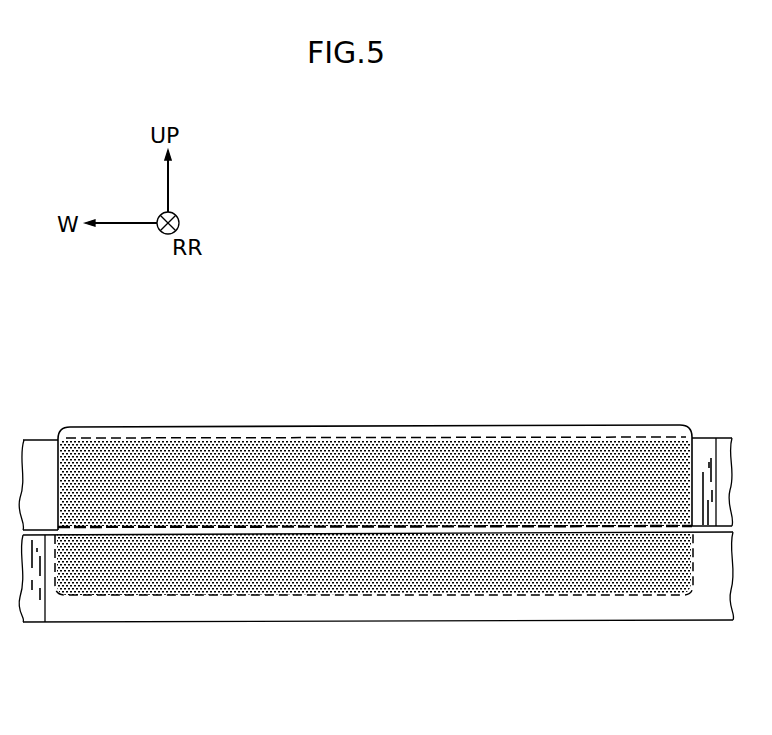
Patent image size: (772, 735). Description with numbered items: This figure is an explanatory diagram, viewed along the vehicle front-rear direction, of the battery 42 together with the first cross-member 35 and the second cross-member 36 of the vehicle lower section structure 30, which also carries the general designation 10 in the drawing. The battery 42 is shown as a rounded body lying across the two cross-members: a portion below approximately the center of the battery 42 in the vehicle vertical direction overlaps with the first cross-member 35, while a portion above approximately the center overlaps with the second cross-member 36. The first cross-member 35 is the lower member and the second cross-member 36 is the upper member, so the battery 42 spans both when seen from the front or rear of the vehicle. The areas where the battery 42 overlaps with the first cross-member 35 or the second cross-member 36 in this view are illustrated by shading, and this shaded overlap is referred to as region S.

The vehicle body structure 10 is at (616, 262).
The vehicle lower section structure 30 is at (532, 383).
The first cross-member 35 is at (653, 620).
The second cross-member 36 is at (705, 438).
The battery 42 is at (635, 425).
The region S is at (347, 466).